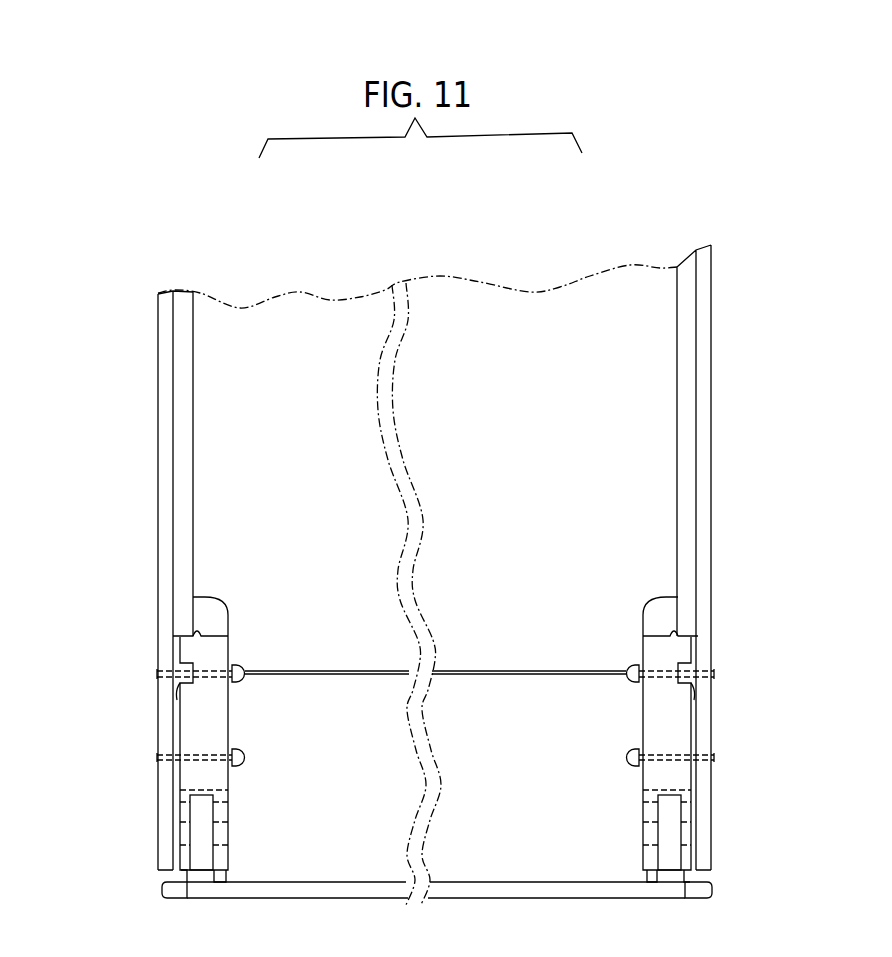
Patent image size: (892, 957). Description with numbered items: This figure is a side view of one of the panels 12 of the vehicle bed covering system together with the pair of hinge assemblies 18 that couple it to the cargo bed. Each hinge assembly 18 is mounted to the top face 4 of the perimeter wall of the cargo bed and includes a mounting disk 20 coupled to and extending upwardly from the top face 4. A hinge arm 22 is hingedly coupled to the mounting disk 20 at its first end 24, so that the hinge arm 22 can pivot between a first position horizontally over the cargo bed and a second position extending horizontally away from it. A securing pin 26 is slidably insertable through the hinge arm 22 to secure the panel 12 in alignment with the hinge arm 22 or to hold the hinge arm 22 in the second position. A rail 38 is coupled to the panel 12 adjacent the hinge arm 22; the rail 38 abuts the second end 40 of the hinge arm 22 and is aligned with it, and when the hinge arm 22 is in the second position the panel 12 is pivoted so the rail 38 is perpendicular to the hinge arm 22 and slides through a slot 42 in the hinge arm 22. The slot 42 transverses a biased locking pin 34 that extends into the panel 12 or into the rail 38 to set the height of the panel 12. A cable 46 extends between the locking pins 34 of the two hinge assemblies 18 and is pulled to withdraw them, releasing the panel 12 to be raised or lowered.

The top face 4 is at (262, 877).
The panel 12 is at (303, 317).
The hinge assembly 18 is at (200, 598).
The mounting disk 20 is at (200, 861).
The hinge arm 22 is at (185, 738).
The first end 24 is at (183, 900).
The securing pin 26 is at (157, 760).
The locking pin 34 is at (157, 674).
The rail 38 is at (182, 452).
The second end 40 is at (192, 630).
The slot 42 is at (177, 700).
The cable 46 is at (567, 666).